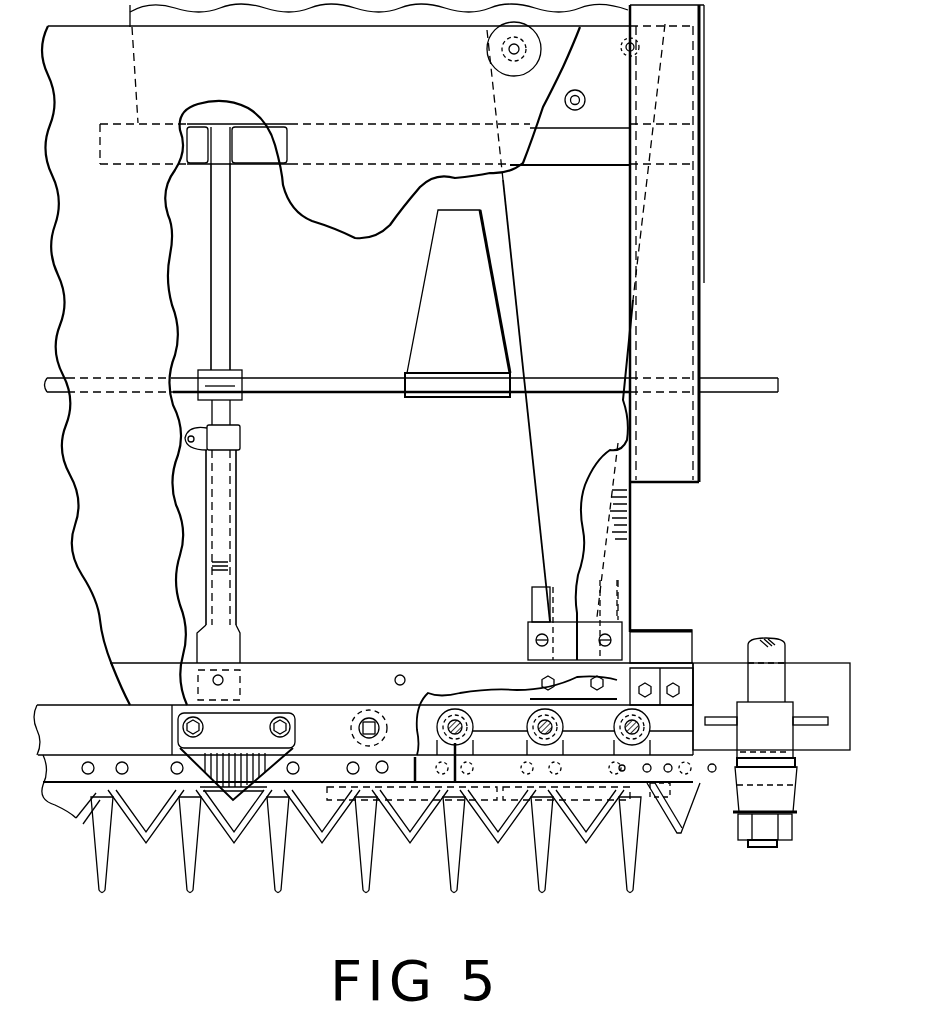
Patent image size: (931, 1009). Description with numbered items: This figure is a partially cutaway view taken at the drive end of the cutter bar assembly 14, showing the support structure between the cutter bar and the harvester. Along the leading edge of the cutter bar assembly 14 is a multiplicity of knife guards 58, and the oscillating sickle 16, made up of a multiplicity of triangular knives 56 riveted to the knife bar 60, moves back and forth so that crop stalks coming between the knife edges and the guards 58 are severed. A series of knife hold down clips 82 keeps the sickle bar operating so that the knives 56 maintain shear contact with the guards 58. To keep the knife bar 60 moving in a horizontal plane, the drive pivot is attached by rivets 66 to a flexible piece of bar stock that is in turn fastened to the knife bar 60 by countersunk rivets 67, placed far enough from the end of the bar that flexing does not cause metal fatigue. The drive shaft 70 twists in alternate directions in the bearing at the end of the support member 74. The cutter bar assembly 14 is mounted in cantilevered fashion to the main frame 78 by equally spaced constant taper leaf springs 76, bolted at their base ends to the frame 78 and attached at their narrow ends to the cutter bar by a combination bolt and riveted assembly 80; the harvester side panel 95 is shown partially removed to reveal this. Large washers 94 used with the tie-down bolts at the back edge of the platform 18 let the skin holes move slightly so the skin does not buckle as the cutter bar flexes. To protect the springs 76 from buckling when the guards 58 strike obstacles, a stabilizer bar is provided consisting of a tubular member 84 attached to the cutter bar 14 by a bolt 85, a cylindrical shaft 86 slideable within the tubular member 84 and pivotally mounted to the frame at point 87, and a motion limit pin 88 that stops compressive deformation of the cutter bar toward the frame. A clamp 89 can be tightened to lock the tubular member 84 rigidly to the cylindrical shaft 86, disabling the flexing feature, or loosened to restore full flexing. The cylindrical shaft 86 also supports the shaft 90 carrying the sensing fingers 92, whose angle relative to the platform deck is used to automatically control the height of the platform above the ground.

The cutter bar assembly 14 is at (339, 653).
The oscillating sickle 16 is at (420, 845).
The platform 18 is at (83, 590).
The triangular knives 56 is at (492, 838).
The knife guards 58 is at (553, 873).
The knife bar 60 is at (480, 757).
The rivets 66 is at (698, 787).
The countersunk rivets 67 is at (117, 757).
The shaft 70 is at (787, 652).
The support member 74 is at (808, 717).
The constant taper leaf springs 76 is at (537, 490).
The main frame 78 is at (608, 85).
The combination bolt and riveted assembly 80 is at (535, 640).
The knife hold down clip 82 is at (296, 740).
The tubular member 84 is at (231, 593).
The bolt 85 is at (225, 680).
The cylindrical shaft 86 is at (232, 307).
The pivot point 87 is at (229, 166).
The motion limit pin 88 is at (240, 403).
The clamp 89 is at (205, 430).
The shaft 90 is at (317, 376).
The sensing fingers 92 is at (417, 305).
The large washers 94 is at (492, 53).
The harvester side panel 95 is at (702, 325).